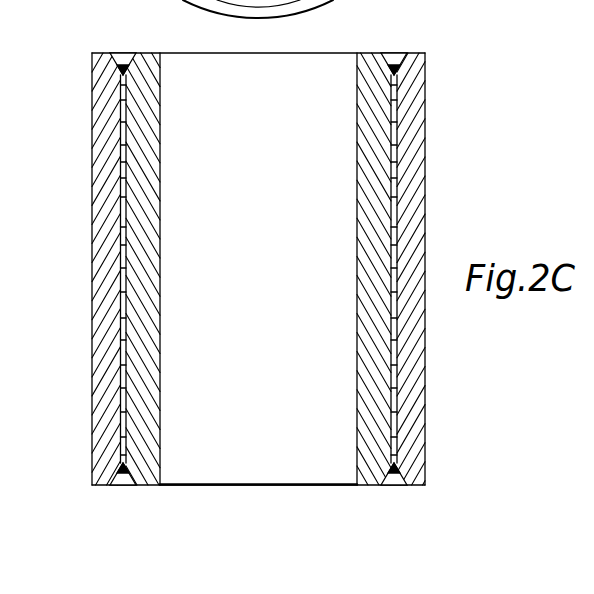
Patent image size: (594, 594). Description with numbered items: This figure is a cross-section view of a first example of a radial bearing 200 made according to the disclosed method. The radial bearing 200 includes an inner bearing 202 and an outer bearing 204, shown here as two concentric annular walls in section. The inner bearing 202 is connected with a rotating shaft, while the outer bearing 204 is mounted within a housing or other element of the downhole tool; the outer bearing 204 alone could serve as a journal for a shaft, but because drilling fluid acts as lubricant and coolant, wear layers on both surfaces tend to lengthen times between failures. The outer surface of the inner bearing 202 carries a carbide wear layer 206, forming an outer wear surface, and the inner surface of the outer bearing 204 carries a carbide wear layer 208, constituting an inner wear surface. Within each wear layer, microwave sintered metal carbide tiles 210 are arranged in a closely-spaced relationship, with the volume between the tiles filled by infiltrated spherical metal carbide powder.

The radial bearing 200 is at (259, 248).
The inner bearing 202 is at (159, 336).
The outer bearing 204 is at (93, 325).
The carbide wear layer 206 is at (126, 62).
The carbide wear layer 208 is at (120, 62).
The microwave sintered metal carbide tiles 210 is at (118, 191).